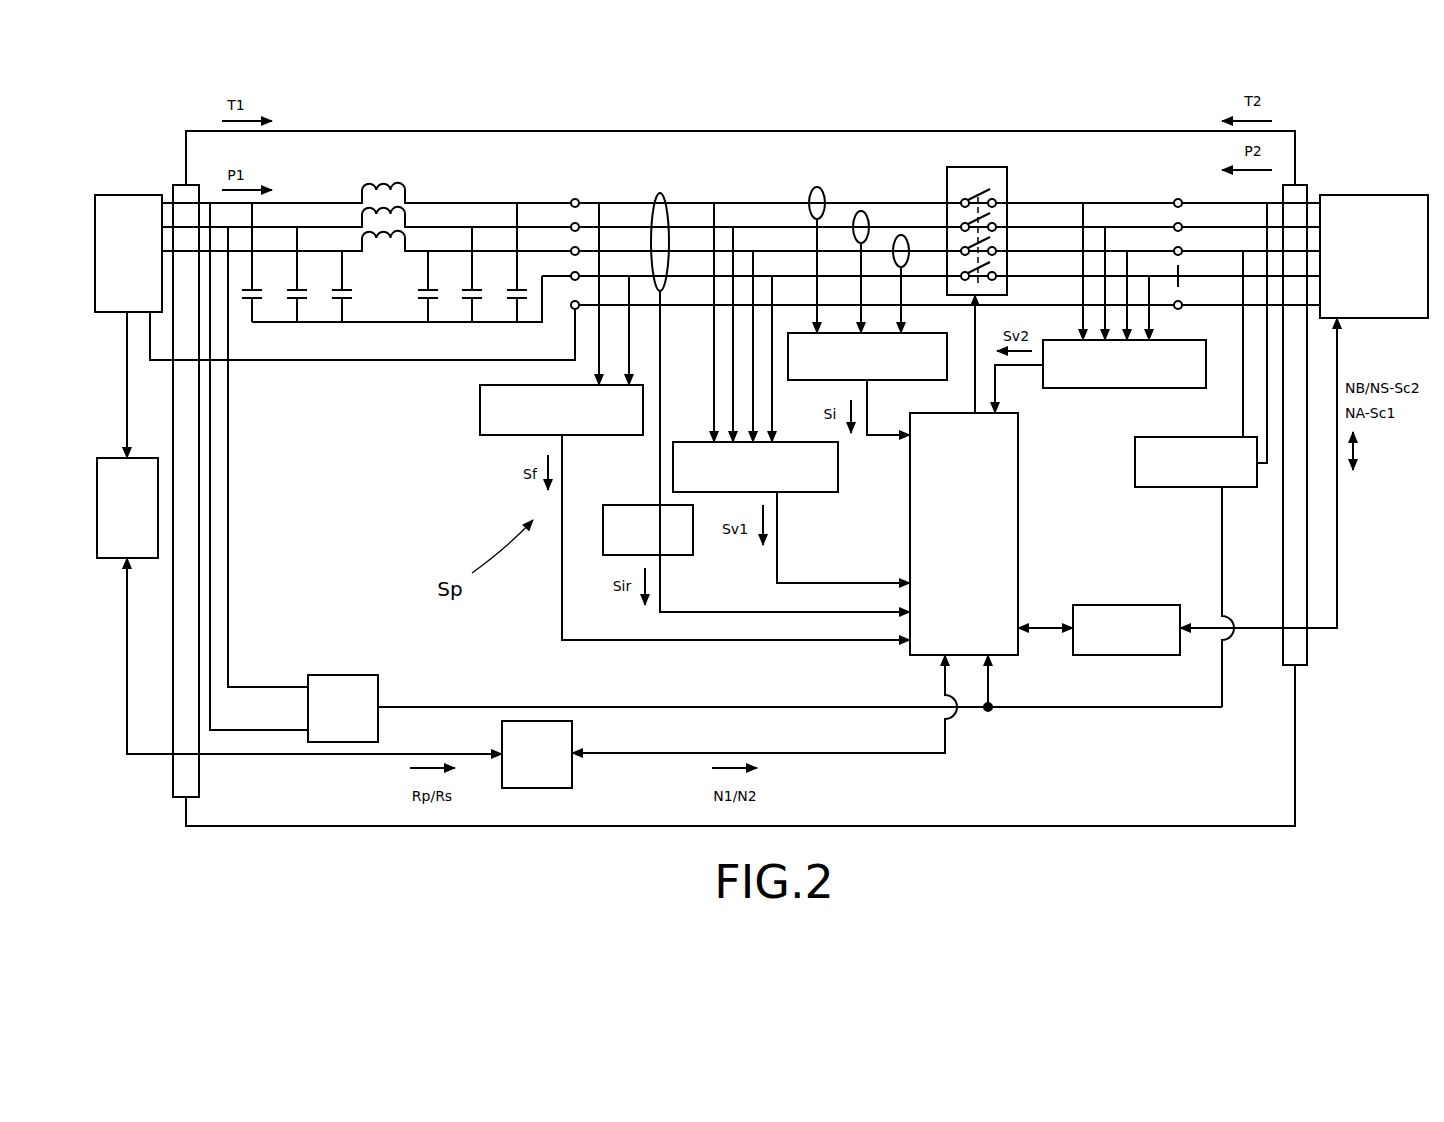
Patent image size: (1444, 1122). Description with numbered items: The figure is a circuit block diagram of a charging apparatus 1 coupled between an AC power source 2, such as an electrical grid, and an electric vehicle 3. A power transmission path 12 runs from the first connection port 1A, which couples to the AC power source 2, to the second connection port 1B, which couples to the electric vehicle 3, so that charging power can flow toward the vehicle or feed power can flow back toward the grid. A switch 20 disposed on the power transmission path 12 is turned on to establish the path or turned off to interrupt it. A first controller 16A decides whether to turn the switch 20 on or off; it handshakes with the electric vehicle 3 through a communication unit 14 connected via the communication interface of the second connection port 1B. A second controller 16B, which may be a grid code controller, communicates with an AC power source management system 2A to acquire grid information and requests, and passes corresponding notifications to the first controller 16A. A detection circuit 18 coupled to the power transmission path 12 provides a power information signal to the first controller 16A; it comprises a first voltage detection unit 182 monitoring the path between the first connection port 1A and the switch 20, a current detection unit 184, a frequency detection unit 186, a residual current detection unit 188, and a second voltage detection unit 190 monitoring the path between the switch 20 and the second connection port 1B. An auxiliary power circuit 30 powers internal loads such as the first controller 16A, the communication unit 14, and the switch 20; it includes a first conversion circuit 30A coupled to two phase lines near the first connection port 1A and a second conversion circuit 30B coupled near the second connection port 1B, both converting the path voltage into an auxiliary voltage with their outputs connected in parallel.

The charging apparatus 1 is at (483, 150).
The first connection port 1A is at (178, 783).
The second connection port 1B is at (1302, 647).
The AC power source 2 is at (118, 268).
The AC power source management system 2A is at (113, 508).
The electric vehicle 3 is at (1380, 207).
The power transmission path 12 is at (748, 198).
The communication unit 14 is at (1112, 639).
The first controller 16A is at (940, 547).
The second controller 16B is at (514, 765).
The detection circuit 18 is at (468, 378).
The first voltage detection unit 182 is at (735, 477).
The current detection unit 184 is at (847, 368).
The frequency detection unit 186 is at (541, 420).
The residual current detection unit 188 is at (628, 540).
The second voltage detection unit 190 is at (1104, 374).
The switch 20 is at (965, 178).
The auxiliary power circuit 30 is at (1006, 742).
The first conversion circuit 30A is at (320, 720).
The second conversion circuit 30B is at (1172, 471).